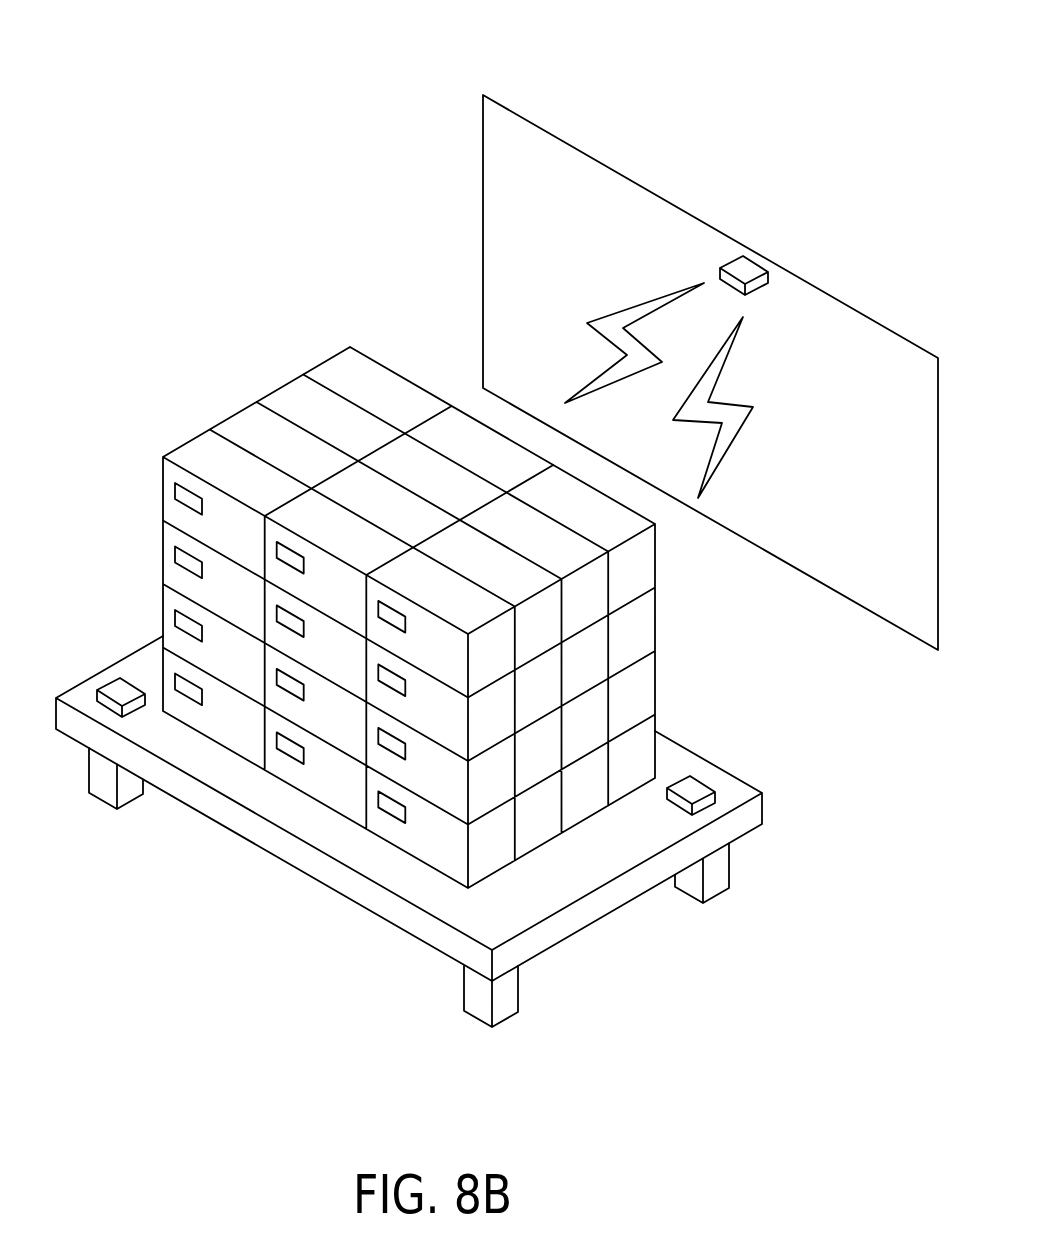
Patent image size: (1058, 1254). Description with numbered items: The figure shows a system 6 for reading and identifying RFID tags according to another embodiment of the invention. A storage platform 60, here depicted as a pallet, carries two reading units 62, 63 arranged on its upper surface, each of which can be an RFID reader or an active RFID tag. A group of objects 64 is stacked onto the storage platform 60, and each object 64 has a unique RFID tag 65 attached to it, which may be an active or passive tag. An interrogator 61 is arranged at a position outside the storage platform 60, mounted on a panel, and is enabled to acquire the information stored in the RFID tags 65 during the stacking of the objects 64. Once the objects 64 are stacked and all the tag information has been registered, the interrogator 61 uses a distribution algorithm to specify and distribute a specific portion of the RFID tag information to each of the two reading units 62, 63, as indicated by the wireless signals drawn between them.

The system for reading and identifying RFID tag 6 is at (356, 78).
The storage platform 60 is at (742, 820).
The interrogator 61 is at (747, 281).
The reading unit 62 is at (688, 790).
The reading unit 63 is at (119, 693).
The object 64 is at (632, 648).
The RFID tag 65 is at (387, 745).